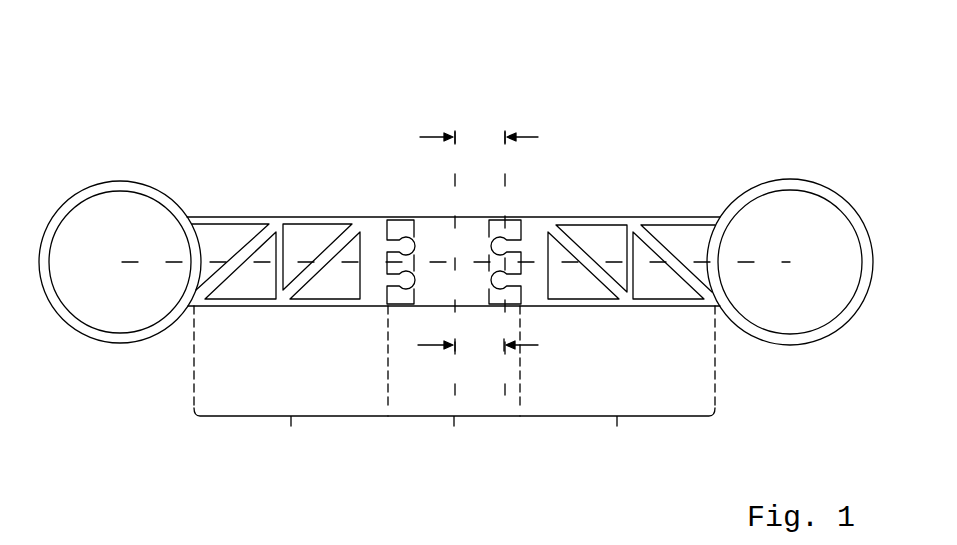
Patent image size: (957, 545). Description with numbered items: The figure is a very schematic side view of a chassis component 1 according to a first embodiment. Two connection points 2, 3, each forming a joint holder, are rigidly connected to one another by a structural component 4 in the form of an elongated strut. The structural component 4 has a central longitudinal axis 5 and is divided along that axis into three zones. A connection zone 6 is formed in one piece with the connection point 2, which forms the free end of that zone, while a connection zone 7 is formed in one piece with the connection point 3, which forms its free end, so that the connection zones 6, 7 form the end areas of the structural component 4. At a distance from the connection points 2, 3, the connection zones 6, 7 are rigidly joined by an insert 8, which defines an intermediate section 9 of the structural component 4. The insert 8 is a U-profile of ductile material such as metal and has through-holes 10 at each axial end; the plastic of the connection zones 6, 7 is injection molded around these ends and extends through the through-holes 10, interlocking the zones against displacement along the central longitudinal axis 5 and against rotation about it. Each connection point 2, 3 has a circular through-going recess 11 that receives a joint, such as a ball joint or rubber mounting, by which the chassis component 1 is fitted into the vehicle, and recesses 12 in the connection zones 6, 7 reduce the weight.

The chassis component 1 is at (200, 71).
The connection point 2 is at (94, 185).
The connection point 3 is at (800, 185).
The structural component 4 is at (360, 215).
The central longitudinal axis 5 is at (168, 260).
The connection zone 6 is at (291, 380).
The connection zone 7 is at (617, 380).
The insert 8 is at (454, 251).
The intermediate section 9 is at (454, 380).
The through-holes 10 is at (405, 237).
The recess 11 is at (93, 312).
The recesses 12 is at (232, 228).